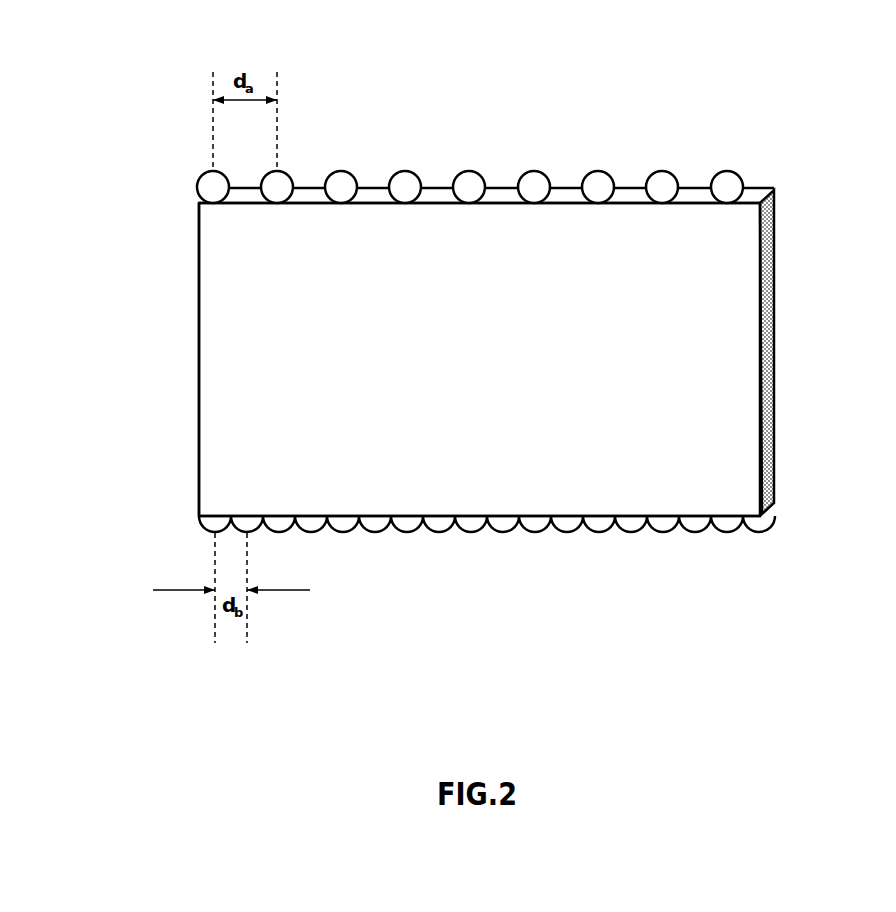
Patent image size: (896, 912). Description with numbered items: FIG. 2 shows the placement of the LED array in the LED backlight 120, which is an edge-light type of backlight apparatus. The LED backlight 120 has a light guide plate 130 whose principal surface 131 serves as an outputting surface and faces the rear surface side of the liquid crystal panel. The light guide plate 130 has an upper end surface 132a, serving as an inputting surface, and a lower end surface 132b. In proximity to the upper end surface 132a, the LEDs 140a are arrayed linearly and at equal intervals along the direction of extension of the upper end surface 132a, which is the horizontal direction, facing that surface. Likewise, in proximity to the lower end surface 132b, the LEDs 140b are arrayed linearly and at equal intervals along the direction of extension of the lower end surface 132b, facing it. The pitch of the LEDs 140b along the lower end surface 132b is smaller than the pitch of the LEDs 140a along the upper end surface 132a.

The LED backlight 120 is at (469, 100).
The light guide plate 130 is at (768, 378).
The principal surface 131 is at (207, 277).
The upper end surface 132a is at (574, 196).
The lower end surface 132b is at (602, 525).
The LEDs 140a is at (670, 178).
The LEDs 140b is at (438, 532).